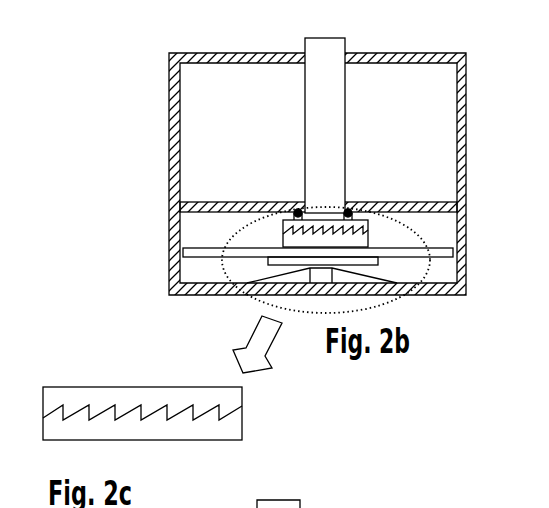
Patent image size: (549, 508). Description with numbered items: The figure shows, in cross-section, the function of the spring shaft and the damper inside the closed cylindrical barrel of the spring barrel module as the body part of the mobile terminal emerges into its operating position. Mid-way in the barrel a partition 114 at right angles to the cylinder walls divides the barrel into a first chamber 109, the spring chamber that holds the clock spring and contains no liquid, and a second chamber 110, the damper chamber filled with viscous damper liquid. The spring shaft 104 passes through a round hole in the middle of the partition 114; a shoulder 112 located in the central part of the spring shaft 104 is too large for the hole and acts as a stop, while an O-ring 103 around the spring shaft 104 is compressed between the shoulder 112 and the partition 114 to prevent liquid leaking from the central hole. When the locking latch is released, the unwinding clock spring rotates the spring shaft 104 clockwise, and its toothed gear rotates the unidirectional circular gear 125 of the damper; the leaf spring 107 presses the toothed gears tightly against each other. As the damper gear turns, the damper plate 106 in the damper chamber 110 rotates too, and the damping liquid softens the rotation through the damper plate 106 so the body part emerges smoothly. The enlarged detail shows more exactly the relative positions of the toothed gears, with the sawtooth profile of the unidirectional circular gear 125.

In FIG. 2B, the O-ring 103 is at (296, 210).
In FIG. 2B, the spring shaft 104 is at (351, 35).
In FIG. 2B, the damper plate 106 is at (437, 248).
In FIG. 2B, the leaf spring 107 is at (358, 292).
In FIG. 2B, the first chamber 109 is at (220, 85).
In FIG. 2B, the second chamber 110 is at (208, 285).
In FIG. 2C, the shoulder 112 is at (55, 392).
In FIG. 2B, the partition 114 is at (437, 201).
In FIG. 2C, the unidirectional circular gear 125 is at (232, 430).